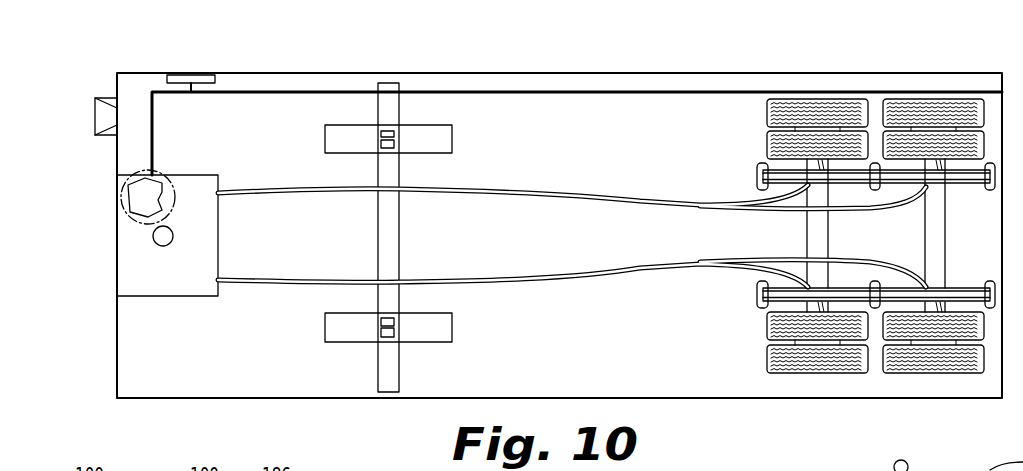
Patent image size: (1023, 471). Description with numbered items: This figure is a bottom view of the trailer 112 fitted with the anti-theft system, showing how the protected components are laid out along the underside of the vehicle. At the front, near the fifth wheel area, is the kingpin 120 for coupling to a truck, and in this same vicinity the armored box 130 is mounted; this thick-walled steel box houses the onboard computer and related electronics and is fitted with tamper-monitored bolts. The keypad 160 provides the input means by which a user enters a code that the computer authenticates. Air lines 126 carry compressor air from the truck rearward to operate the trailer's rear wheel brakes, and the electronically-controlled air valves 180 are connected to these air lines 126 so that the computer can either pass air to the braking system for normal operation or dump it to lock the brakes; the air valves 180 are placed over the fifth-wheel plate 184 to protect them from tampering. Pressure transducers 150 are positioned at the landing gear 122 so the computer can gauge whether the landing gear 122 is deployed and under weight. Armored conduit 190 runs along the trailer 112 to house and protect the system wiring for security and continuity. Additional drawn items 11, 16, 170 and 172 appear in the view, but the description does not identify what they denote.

The trailer 112 is at (907, 45).
The armored conduit 190 is at (603, 91).
The keypad 160 is at (185, 73).
The armored box 130 is at (97, 120).
The fifth-wheel plate 184 is at (203, 187).
The power unit 11 is at (130, 220).
The kingpin 120 is at (162, 246).
The landing gear 122 is at (443, 144).
The pressure transducers 150 is at (386, 152).
The air lines 126 is at (670, 200).
The tire 16 is at (928, 108).
The component (adjacent figure) 170 is at (860, 464).
The component (adjacent figure) 172 is at (912, 466).
The air valves 180 is at (152, 461).